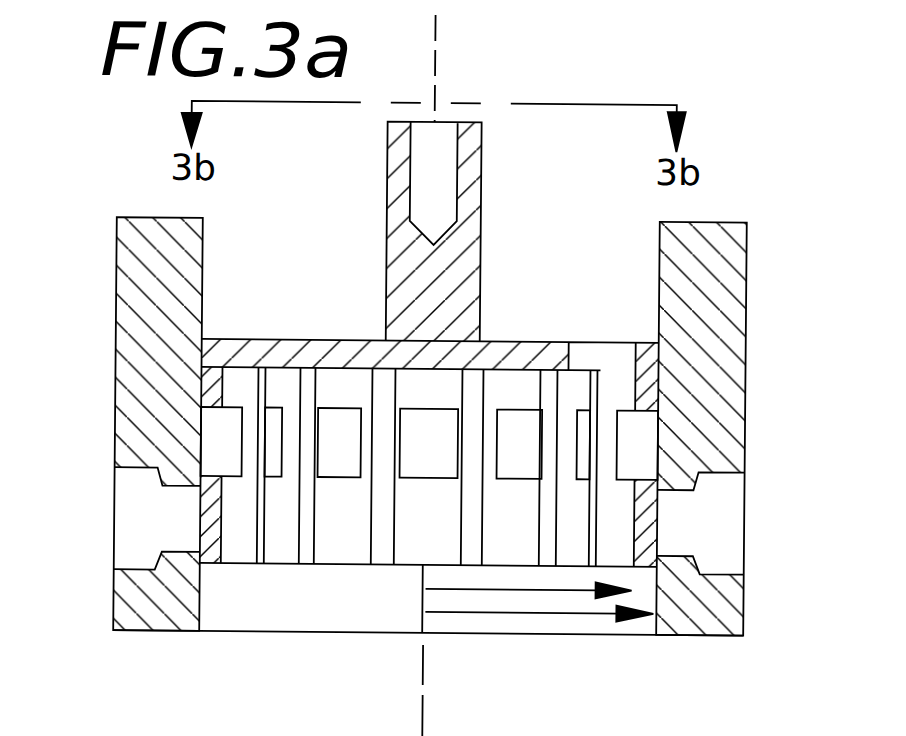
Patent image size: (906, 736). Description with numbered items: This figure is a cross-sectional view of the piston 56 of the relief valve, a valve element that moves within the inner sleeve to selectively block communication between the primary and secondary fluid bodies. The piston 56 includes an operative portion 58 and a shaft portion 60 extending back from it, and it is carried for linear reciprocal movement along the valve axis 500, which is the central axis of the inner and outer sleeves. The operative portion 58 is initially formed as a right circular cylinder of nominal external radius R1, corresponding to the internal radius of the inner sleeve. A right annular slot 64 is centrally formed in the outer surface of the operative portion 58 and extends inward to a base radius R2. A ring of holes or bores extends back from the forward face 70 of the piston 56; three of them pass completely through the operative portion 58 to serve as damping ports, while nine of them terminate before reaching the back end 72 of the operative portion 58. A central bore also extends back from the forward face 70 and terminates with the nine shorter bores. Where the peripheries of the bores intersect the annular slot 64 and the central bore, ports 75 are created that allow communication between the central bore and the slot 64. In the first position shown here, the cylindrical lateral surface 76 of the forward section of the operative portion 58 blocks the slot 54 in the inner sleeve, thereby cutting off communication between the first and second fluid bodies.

The valve axis 500 is at (432, 68).
The shaft portion 60 is at (466, 187).
The piston 56 is at (289, 286).
The operative portion 58 is at (548, 330).
The slot 54 is at (152, 527).
The back end 72 is at (499, 341).
The cylindrical lateral surface 76 is at (657, 536).
The right annular slot 64 is at (192, 439).
The ports 75 is at (421, 491).
The forward face 70 is at (289, 600).
The nominal external radius R1 is at (593, 611).
The base radius R2 is at (527, 589).